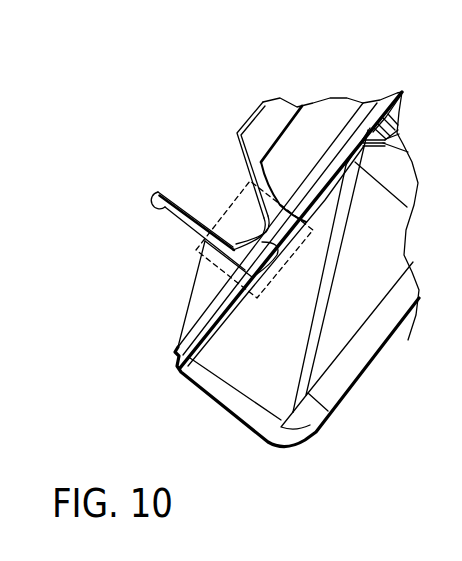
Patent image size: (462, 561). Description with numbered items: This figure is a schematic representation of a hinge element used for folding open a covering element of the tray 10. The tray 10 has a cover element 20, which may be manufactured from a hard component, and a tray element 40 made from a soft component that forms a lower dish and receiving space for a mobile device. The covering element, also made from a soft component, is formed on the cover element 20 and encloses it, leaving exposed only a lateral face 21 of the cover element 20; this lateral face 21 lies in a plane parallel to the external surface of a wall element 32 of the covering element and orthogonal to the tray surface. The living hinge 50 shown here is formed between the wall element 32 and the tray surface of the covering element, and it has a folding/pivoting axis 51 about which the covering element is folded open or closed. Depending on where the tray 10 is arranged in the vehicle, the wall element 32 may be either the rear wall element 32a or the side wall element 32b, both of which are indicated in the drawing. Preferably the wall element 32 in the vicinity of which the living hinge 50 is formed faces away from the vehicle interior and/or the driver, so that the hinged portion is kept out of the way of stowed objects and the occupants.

The tray 10 is at (124, 139).
The cover element 20 is at (293, 204).
The lateral face 21 is at (344, 106).
The wall element 32 is at (192, 155).
The rear wall element 32a is at (162, 202).
The side wall element 32b is at (273, 107).
The tray element 40 is at (346, 410).
The living hinge 50 is at (241, 227).
The folding/pivoting axis 51 is at (261, 243).